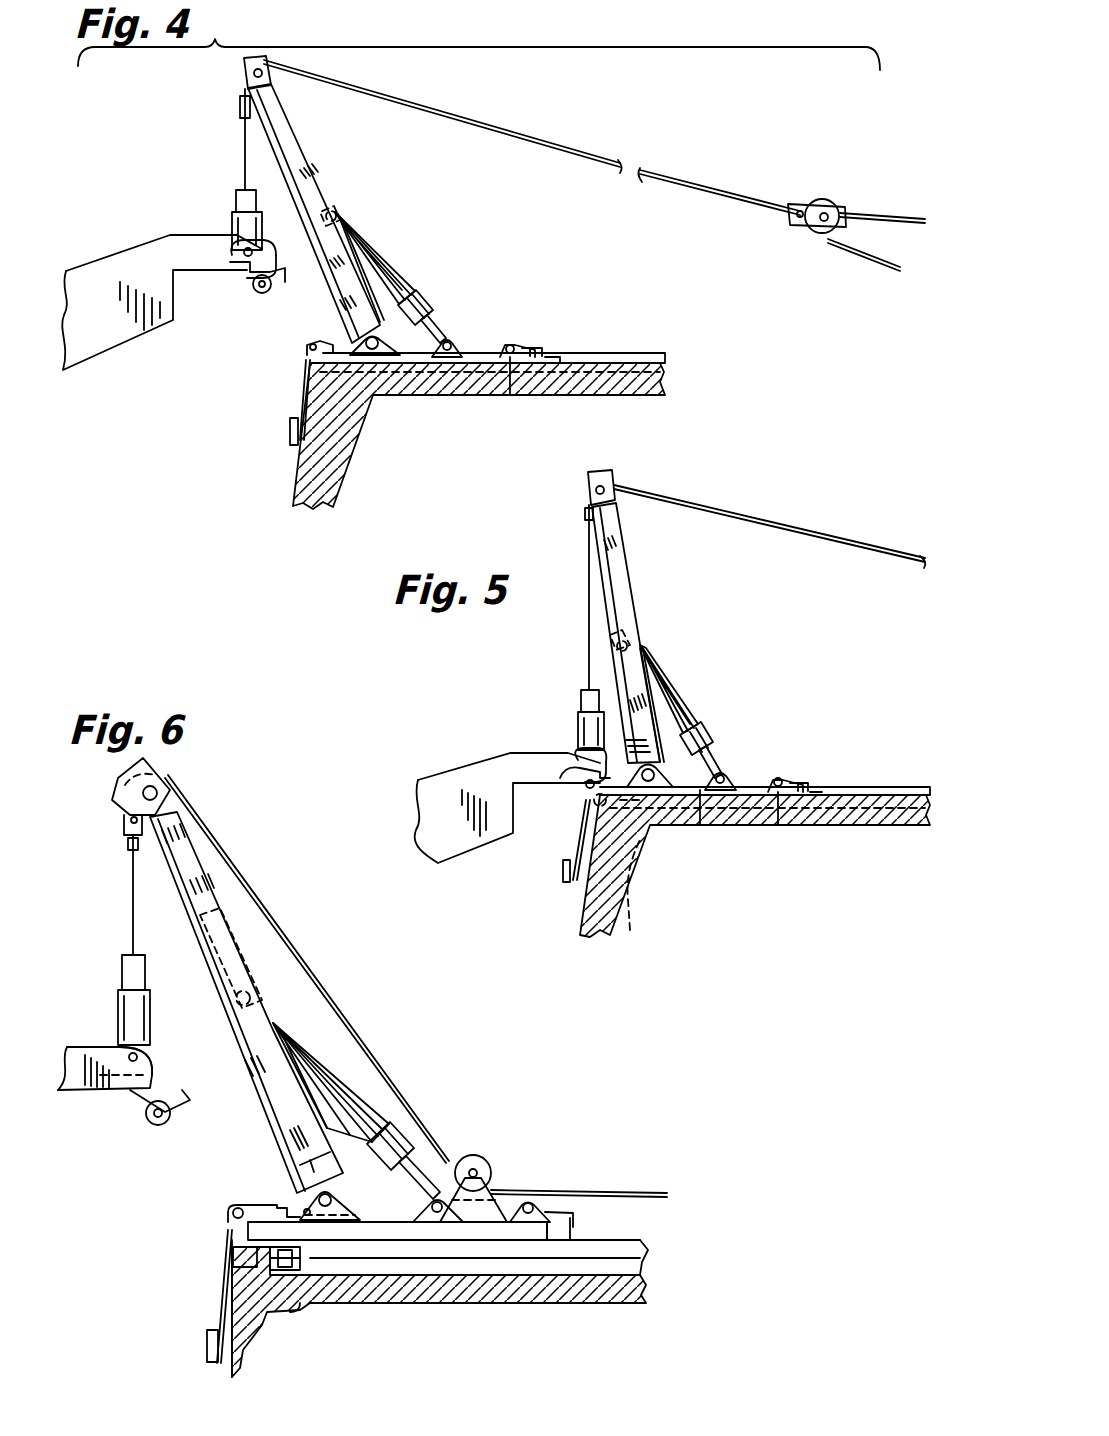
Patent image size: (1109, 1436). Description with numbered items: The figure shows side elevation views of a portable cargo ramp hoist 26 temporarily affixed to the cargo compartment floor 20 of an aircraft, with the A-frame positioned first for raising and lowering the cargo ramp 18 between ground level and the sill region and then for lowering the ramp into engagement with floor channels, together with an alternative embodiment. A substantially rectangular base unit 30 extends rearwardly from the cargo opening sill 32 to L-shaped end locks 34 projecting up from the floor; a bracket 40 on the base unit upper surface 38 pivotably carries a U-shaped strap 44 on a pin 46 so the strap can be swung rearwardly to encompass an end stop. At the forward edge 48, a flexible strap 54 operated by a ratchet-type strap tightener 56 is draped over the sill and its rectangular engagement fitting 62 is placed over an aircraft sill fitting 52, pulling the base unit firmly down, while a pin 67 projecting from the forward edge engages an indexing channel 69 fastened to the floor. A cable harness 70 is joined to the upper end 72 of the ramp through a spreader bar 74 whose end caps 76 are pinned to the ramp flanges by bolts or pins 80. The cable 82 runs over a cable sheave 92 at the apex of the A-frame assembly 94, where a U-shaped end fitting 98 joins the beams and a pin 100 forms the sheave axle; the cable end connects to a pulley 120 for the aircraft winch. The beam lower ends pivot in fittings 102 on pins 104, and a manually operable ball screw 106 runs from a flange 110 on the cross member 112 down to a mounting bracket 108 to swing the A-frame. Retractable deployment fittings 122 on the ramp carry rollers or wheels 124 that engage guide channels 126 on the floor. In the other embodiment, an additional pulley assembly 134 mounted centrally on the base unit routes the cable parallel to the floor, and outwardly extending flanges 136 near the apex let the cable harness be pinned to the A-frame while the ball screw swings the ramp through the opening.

In FIG. 4, the cargo ramp 18 is at (112, 338).
In FIG. 5, the cargo ramp 18 is at (466, 840).
In FIG. 6, the cargo ramp 18 is at (77, 1094).
In FIG. 4, the cargo compartment floor 20 is at (648, 354).
In FIG. 5, the cargo compartment floor 20 is at (880, 793).
In FIG. 4, the portable cargo ramp hoist 26 is at (340, 214).
In FIG. 5, the portable cargo ramp hoist 26 is at (646, 650).
In FIG. 5, the base unit 30 is at (706, 798).
In FIG. 6, the base unit 30 is at (415, 1240).
In FIG. 4, the cargo opening sill 32 is at (312, 370).
In FIG. 5, the cargo opening sill 32 is at (590, 800).
In FIG. 4, the end locks 34 is at (562, 364).
In FIG. 5, the end locks 34 is at (824, 795).
In FIG. 4, the base unit upper surface 38 is at (410, 338).
In FIG. 5, the base unit upper surface 38 is at (690, 788).
In FIG. 4, the bracket 40 is at (515, 346).
In FIG. 5, the bracket 40 is at (780, 778).
In FIG. 6, the bracket 40 is at (541, 1222).
In FIG. 4, the U-shaped strap 44 is at (538, 350).
In FIG. 5, the U-shaped strap 44 is at (800, 784).
In FIG. 4, the pin 46 is at (506, 362).
In FIG. 5, the pin 46 is at (782, 798).
In FIG. 6, the forward edge 48 is at (252, 1230).
In FIG. 4, the aircraft sill fittings 52 is at (290, 432).
In FIG. 5, the aircraft sill fittings 52 is at (568, 872).
In FIG. 6, the aircraft sill fittings 52 is at (206, 1340).
In FIG. 4, the flexible strap 54 is at (305, 386).
In FIG. 6, the flexible strap 54 is at (228, 1246).
In FIG. 4, the strap tightener 56 is at (324, 347).
In FIG. 6, the strap tightener 56 is at (276, 1206).
In FIG. 6, the engagement fitting 62 is at (218, 1308).
In FIG. 6, the pin 67 is at (272, 1262).
In FIG. 6, the indexing channel 69 is at (292, 1310).
In FIG. 4, the cable harness 70 is at (240, 148).
In FIG. 5, the cable harness 70 is at (585, 640).
In FIG. 6, the cable harness 70 is at (133, 895).
In FIG. 4, the upper end 72 is at (268, 258).
In FIG. 5, the upper end 72 is at (606, 768).
In FIG. 6, the upper end 72 is at (154, 1076).
In FIG. 4, the spreader bar 74 is at (237, 228).
In FIG. 5, the spreader bar 74 is at (580, 728).
In FIG. 6, the spreader bar 74 is at (134, 1000).
In FIG. 4, the caps 76 is at (258, 245).
In FIG. 4, the bolts or pins 80 is at (232, 246).
In FIG. 5, the bolts or pins 80 is at (582, 760).
In FIG. 6, the bolts or pins 80 is at (148, 1056).
In FIG. 4, the cable 82 is at (480, 124).
In FIG. 5, the cable 82 is at (765, 518).
In FIG. 6, the cable 82 is at (362, 1068).
In FIG. 4, the cable sheave 92 is at (246, 82).
In FIG. 5, the cable sheave 92 is at (612, 480).
In FIG. 6, the cable sheave 92 is at (166, 778).
In FIG. 4, the A-frame assembly 94 is at (296, 170).
In FIG. 5, the A-frame assembly 94 is at (618, 597).
In FIG. 6, the A-frame assembly 94 is at (220, 892).
In FIG. 4, the U-shaped end fitting 98 is at (246, 66).
In FIG. 4, the pin 100 is at (270, 66).
In FIG. 5, the pin 100 is at (616, 487).
In FIG. 4, the fittings 102 is at (364, 342).
In FIG. 5, the fittings 102 is at (655, 792).
In FIG. 6, the fittings 102 is at (330, 1206).
In FIG. 4, the pins 104 is at (424, 302).
In FIG. 5, the pins 104 is at (638, 805).
In FIG. 4, the ball screw 106 is at (405, 298).
In FIG. 5, the ball screw 106 is at (690, 722).
In FIG. 6, the ball screw 106 is at (330, 1110).
In FIG. 4, the mounting bracket 108 is at (452, 345).
In FIG. 5, the mounting bracket 108 is at (730, 780).
In FIG. 6, the mounting bracket 108 is at (415, 1172).
In FIG. 4, the flange 110 is at (332, 206).
In FIG. 5, the flange 110 is at (640, 642).
In FIG. 6, the flange 110 is at (252, 1000).
In FIG. 4, the cross member 112 is at (324, 186).
In FIG. 5, the cross member 112 is at (640, 622).
In FIG. 6, the cross member 112 is at (258, 962).
In FIG. 4, the pulley 120 is at (822, 203).
In FIG. 4, the deployment fittings 122 is at (282, 282).
In FIG. 5, the deployment fittings 122 is at (578, 776).
In FIG. 6, the deployment fittings 122 is at (178, 1093).
In FIG. 4, the rollers or wheels 124 is at (260, 295).
In FIG. 5, the rollers or wheels 124 is at (590, 835).
In FIG. 6, the rollers or wheels 124 is at (158, 1128).
In FIG. 5, the guide channels 126 is at (630, 920).
In FIG. 6, the pulley assembly 134 is at (488, 1160).
In FIG. 6, the flanges 136 is at (118, 814).